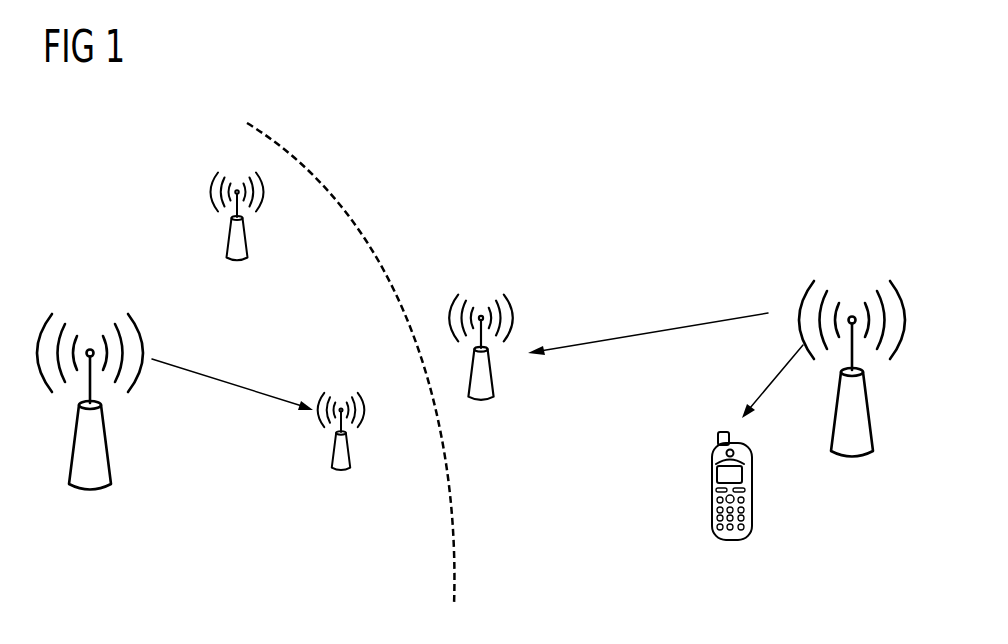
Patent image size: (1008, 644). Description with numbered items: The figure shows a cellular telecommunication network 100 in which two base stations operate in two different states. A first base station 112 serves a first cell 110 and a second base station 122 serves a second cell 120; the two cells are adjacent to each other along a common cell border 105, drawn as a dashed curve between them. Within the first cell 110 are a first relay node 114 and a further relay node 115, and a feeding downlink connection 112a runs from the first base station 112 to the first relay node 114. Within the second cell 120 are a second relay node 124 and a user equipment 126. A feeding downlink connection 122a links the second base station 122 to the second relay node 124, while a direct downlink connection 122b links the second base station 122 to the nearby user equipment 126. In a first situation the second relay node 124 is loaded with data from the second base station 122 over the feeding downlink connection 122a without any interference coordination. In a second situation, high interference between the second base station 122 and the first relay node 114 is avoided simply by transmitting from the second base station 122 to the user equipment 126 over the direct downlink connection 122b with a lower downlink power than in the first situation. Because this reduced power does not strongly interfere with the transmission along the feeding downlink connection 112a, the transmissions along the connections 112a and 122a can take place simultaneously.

The cellular telecommunication network 100 is at (137, 203).
The common cell border 105 is at (456, 578).
The first cell 110 is at (367, 594).
The first base station 112 is at (100, 456).
The feeding downlink connection 112a is at (228, 383).
The first relay node 114 is at (341, 470).
The further relay node 115 is at (232, 232).
The second cell 120 is at (600, 566).
The second base station 122 is at (852, 455).
The feeding downlink connection 122a is at (653, 331).
The direct downlink connection 122b is at (771, 385).
The second relay node 124 is at (489, 383).
The user equipment 126 is at (712, 497).